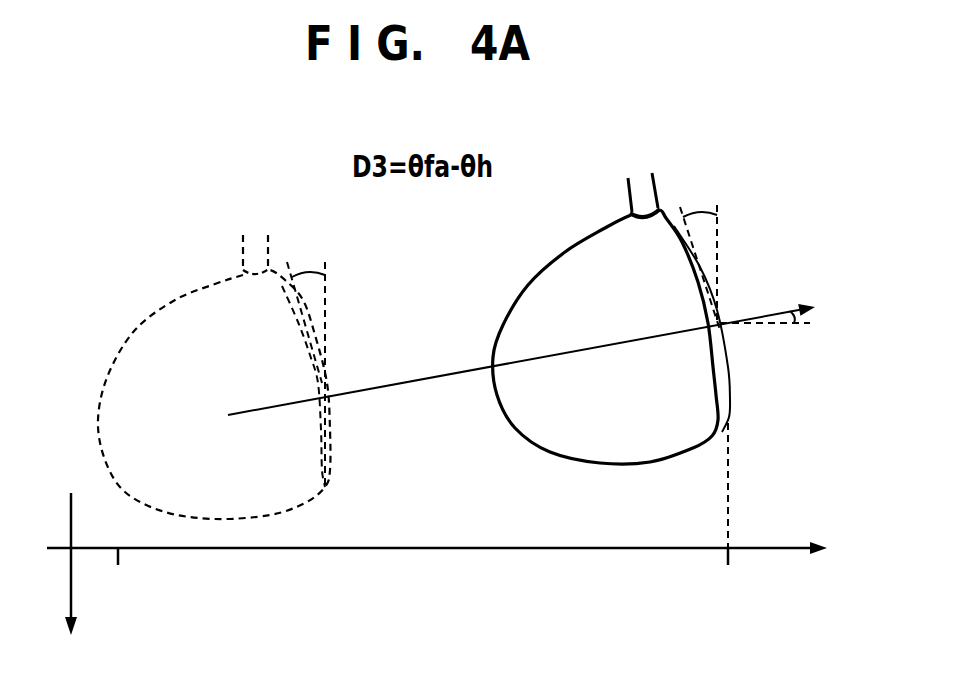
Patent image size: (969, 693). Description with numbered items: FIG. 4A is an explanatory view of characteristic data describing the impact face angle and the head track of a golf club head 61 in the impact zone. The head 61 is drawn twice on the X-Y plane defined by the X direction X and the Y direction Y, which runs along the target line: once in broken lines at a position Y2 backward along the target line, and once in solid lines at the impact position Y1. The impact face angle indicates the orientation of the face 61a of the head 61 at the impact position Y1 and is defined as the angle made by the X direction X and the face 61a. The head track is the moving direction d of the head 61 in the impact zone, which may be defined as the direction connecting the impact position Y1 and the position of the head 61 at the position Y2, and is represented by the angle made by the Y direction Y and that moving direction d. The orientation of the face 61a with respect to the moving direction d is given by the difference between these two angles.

The head 61 is at (186, 298).
The face 61a is at (723, 370).
The moving direction d is at (438, 375).
The impact position Y1 is at (733, 510).
The position Y2 is at (122, 574).
The X direction X is at (72, 583).
The Y direction Y is at (447, 548).